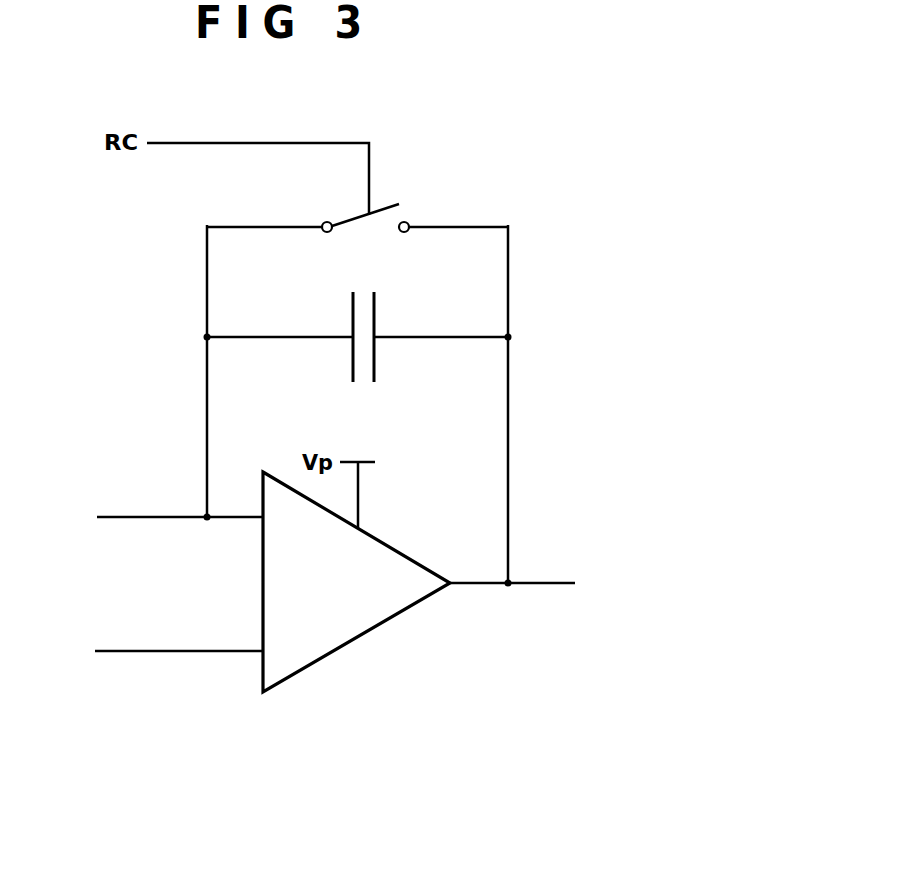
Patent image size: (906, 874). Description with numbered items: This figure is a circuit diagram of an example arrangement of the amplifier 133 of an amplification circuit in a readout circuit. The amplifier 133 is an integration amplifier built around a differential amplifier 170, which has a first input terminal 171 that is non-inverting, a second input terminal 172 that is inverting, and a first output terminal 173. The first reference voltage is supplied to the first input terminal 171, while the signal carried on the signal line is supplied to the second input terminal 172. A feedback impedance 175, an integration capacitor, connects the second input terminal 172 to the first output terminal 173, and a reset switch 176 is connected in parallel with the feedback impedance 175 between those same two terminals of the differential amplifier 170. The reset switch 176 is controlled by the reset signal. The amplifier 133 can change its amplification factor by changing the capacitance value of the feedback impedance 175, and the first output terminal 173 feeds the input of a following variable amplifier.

The amplifier 133 is at (365, 765).
The differential amplifier 170 is at (373, 634).
The first input terminal 171 is at (263, 653).
The second input terminal 172 is at (263, 517).
The first output terminal 173 is at (452, 586).
The feedback impedance 175 is at (389, 345).
The reset switch 176 is at (373, 232).